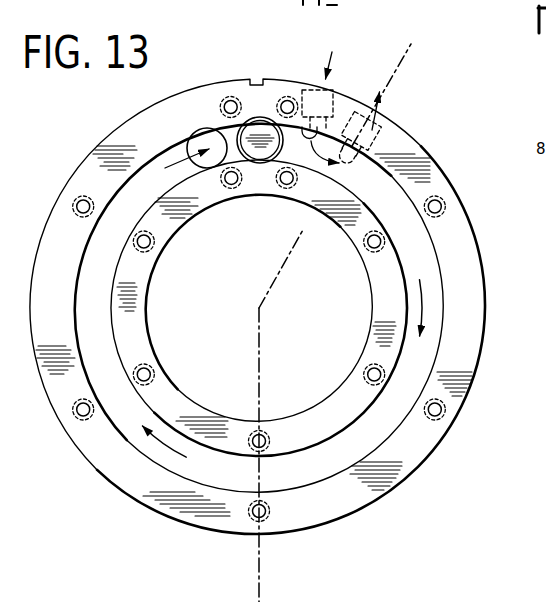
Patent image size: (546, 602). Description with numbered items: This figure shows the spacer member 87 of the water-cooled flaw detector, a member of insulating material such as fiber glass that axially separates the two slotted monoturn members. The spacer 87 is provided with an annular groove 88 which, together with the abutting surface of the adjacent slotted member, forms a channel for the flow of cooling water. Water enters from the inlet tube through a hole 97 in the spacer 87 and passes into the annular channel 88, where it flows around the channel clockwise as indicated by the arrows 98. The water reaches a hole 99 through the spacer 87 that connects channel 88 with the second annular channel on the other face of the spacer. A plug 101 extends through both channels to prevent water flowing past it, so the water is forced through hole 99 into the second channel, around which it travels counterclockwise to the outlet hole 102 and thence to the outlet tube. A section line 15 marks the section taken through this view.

The section line 15- 15 is at (226, 568).
The spacer member 87 is at (474, 286).
The annular groove 88 is at (417, 258).
The hole 97 is at (313, 117).
The arrows 98 is at (420, 297).
The hole 99 is at (203, 130).
The plug 101 is at (259, 133).
The outlet hole 102 is at (383, 118).